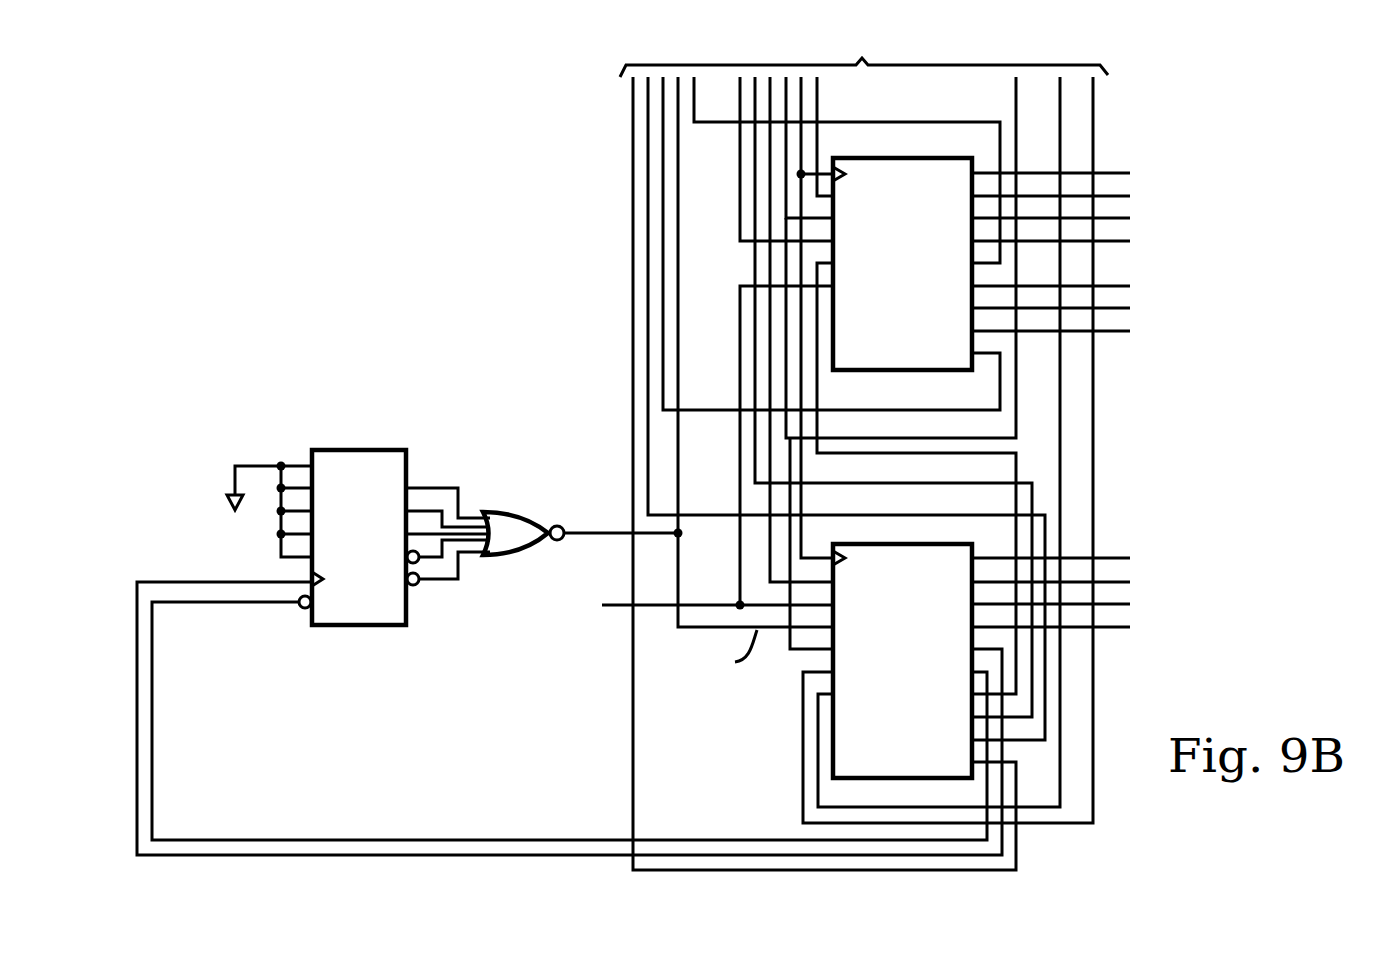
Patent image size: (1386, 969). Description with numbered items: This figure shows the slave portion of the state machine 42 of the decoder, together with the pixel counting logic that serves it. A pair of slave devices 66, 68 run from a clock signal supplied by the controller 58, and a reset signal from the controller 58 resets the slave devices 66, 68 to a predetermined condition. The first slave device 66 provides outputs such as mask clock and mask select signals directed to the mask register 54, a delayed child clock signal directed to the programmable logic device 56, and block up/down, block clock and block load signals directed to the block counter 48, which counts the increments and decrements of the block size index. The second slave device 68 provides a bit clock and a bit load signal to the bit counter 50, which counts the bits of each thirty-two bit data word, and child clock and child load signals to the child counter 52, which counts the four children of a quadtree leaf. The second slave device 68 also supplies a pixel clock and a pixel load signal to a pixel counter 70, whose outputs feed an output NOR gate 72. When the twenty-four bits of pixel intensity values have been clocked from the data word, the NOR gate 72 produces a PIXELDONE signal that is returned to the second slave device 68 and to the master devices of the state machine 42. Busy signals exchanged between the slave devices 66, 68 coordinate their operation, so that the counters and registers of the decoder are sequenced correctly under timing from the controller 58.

The state machine 42 is at (463, 284).
The block counter 48 is at (1166, 308).
The bit counter 50 is at (1144, 558).
The child counter 52 is at (1161, 604).
The mask register 54 is at (1145, 196).
The programmable logic device 56 is at (1159, 241).
The controller 58 is at (644, 605).
The first slave device 66 is at (917, 273).
The second slave device 68 is at (917, 649).
The pixel counter 70 is at (358, 450).
The output NOR gate 72 is at (517, 512).